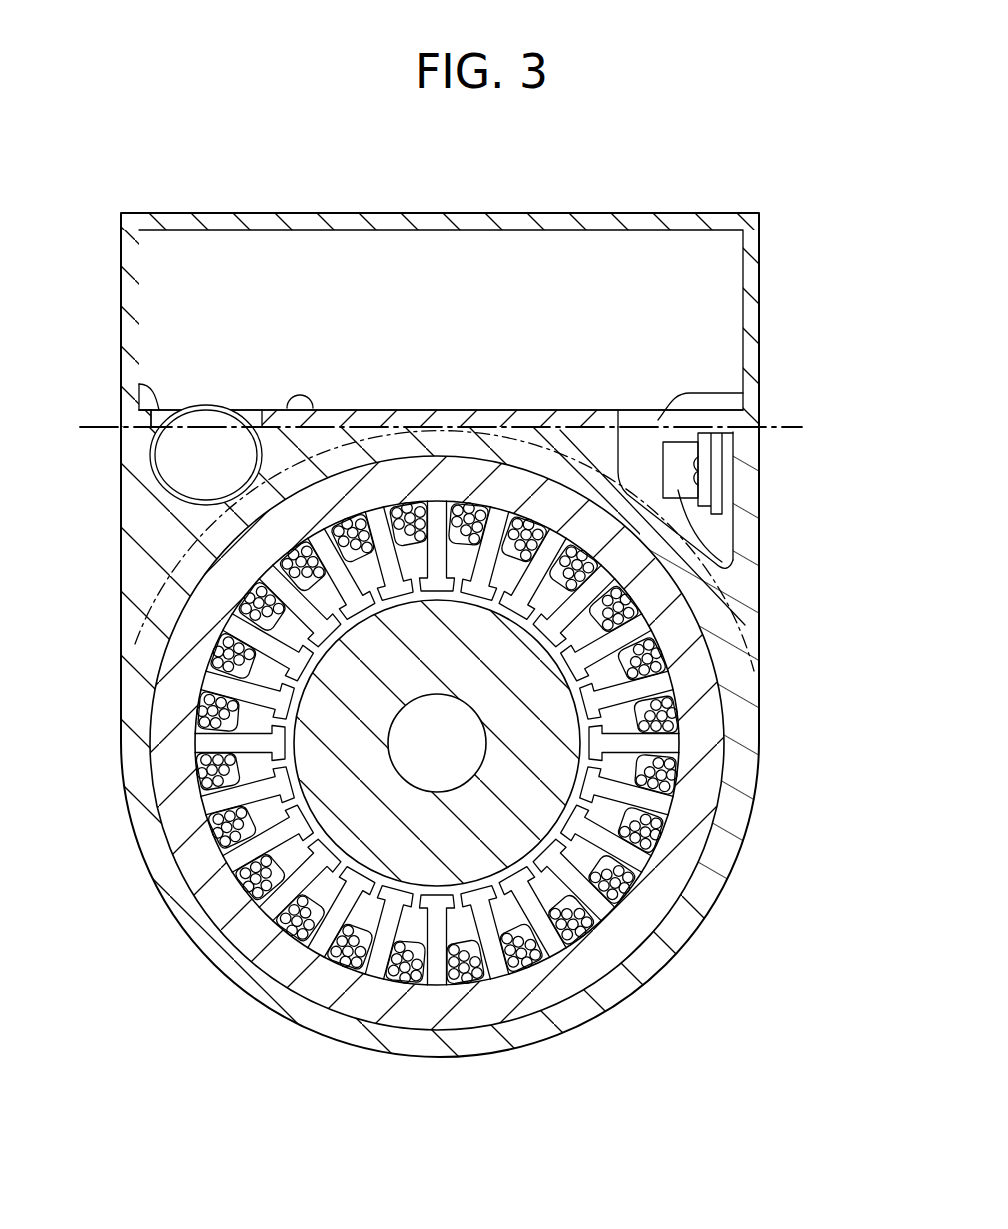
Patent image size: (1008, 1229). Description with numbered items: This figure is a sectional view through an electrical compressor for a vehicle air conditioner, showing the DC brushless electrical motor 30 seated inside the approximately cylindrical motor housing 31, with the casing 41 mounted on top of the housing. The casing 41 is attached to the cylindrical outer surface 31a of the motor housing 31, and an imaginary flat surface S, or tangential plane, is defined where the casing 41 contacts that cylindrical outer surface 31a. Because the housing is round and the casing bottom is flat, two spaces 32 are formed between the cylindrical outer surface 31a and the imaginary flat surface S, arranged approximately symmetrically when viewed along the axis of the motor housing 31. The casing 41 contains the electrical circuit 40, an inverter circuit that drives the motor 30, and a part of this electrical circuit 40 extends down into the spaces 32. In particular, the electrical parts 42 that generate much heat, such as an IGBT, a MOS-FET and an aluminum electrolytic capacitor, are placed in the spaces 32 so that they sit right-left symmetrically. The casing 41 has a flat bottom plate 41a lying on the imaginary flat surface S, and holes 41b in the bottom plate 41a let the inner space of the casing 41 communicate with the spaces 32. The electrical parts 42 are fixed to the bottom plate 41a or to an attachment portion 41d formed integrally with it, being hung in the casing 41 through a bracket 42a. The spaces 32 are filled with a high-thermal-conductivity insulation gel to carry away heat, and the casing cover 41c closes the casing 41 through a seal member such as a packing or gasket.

The DC brushless electrical motor 30 is at (665, 902).
The motor housing 31 is at (738, 848).
The cylindrical outer surface 31a is at (742, 610).
The space 32 is at (152, 430).
The electrical circuit 40 is at (678, 270).
The casing 41 is at (761, 318).
The bottom plate 41a is at (360, 410).
The hole 41b is at (121, 388).
The casing cover 41c is at (552, 230).
The attachment portion 41d is at (717, 463).
The electrical parts 42 is at (185, 483).
The bracket 42a is at (258, 410).
The imaginary flat surface S is at (802, 427).